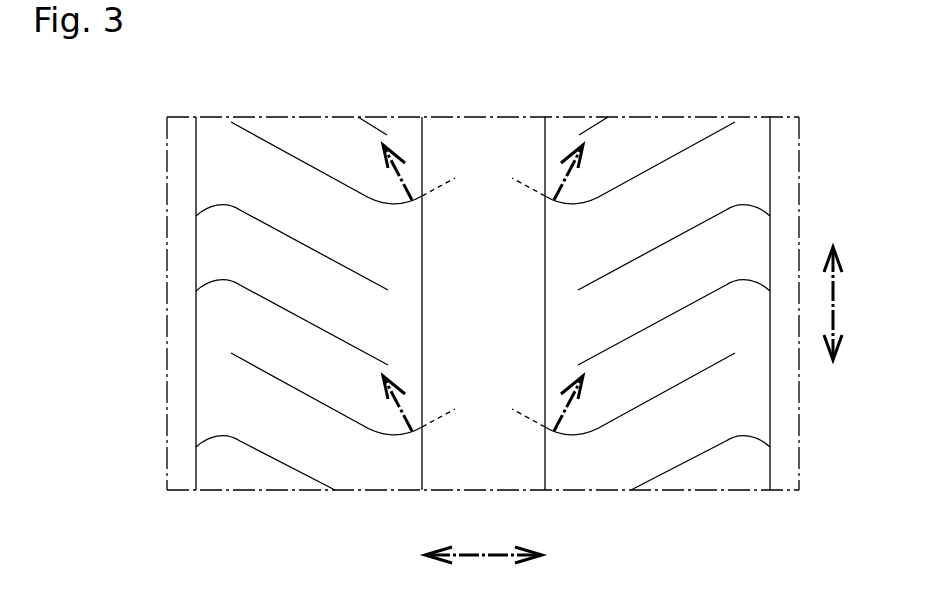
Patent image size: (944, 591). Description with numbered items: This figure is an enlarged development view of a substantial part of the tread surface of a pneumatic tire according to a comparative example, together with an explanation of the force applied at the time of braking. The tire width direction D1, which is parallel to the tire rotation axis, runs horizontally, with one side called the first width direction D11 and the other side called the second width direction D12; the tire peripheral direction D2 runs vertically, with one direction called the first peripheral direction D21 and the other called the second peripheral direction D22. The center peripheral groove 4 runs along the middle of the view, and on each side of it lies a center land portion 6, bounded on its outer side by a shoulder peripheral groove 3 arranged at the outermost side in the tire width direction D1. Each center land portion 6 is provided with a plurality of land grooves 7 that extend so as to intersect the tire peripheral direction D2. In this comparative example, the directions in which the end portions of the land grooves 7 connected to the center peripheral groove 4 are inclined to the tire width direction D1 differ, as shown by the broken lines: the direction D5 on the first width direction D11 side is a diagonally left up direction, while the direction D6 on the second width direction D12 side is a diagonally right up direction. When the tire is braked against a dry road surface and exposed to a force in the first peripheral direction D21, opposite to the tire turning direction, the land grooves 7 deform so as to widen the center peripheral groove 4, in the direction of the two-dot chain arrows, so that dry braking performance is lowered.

The shoulder peripheral groove 3 is at (182, 122).
The center peripheral groove 4 is at (483, 122).
The center land portion 6 is at (298, 122).
The land groove 7 is at (305, 165).
The direction of inclination of land groove end portion D6 is at (445, 182).
The direction of inclination of land groove end portion D5 is at (522, 182).
The tire peripheral direction D2 is at (847, 303).
The first peripheral direction D21 is at (831, 249).
The second peripheral direction D22 is at (834, 361).
The tire width direction D1 is at (483, 568).
The second width direction D12 is at (419, 556).
The first width direction D11 is at (548, 556).